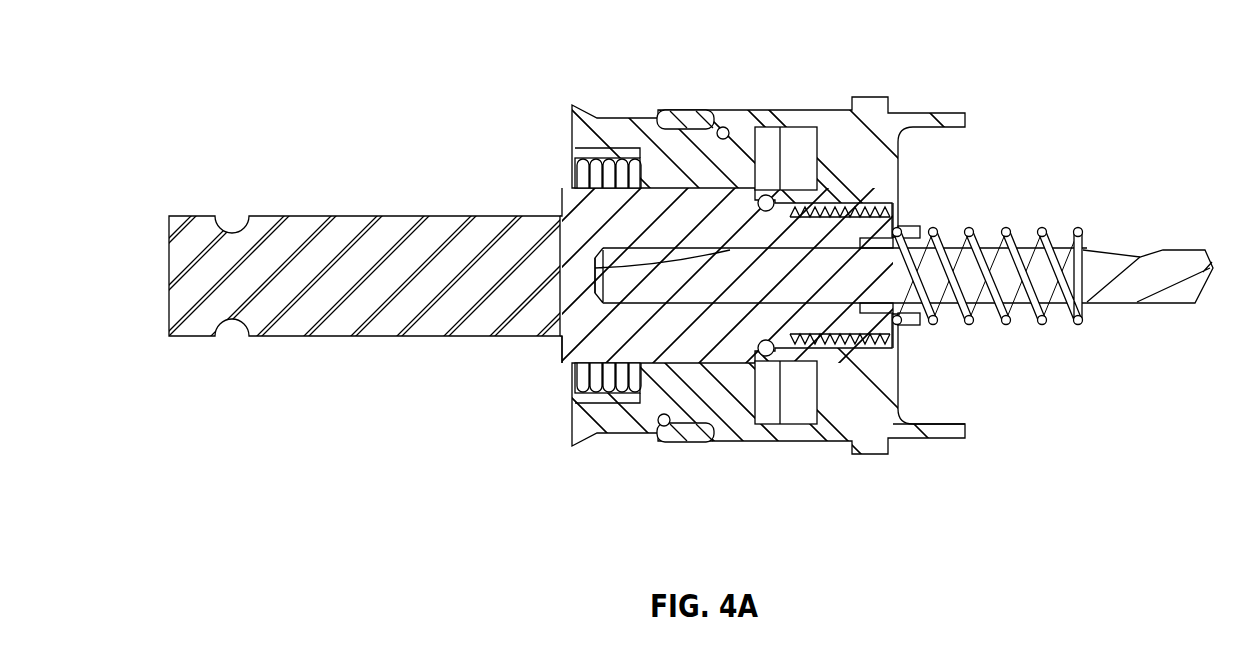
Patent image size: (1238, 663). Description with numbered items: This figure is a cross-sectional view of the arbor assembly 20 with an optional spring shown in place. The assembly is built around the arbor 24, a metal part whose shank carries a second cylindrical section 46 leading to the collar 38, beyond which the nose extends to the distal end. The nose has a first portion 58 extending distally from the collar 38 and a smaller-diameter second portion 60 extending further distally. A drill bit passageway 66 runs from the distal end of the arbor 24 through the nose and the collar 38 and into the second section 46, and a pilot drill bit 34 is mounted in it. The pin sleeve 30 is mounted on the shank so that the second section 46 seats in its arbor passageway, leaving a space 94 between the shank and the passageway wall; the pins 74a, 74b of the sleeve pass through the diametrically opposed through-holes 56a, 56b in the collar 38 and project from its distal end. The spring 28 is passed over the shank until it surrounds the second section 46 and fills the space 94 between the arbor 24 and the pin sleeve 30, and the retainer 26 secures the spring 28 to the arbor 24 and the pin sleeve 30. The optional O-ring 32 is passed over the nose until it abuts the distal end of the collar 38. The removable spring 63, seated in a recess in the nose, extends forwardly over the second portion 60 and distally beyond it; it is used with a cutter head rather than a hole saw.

The arbor assembly 20 is at (252, 384).
The arbor 24 is at (414, 208).
The retainer 26 is at (570, 370).
The spring 28 is at (620, 147).
The pin sleeve 30 is at (628, 432).
The O-ring 32 is at (774, 196).
The pilot drill bit 34 is at (1127, 316).
The collar 38 is at (631, 428).
The second cylindrical section 46 is at (600, 322).
The through-hole 56a is at (737, 130).
The through-hole 56b is at (688, 420).
The first portion of nose 58 is at (898, 442).
The second portion of nose 60 is at (912, 327).
The removable spring 63 is at (1040, 229).
The drill bit passageway 66 is at (596, 264).
The pin 74a is at (672, 128).
The pin 74b is at (710, 400).
The space 94 is at (573, 432).